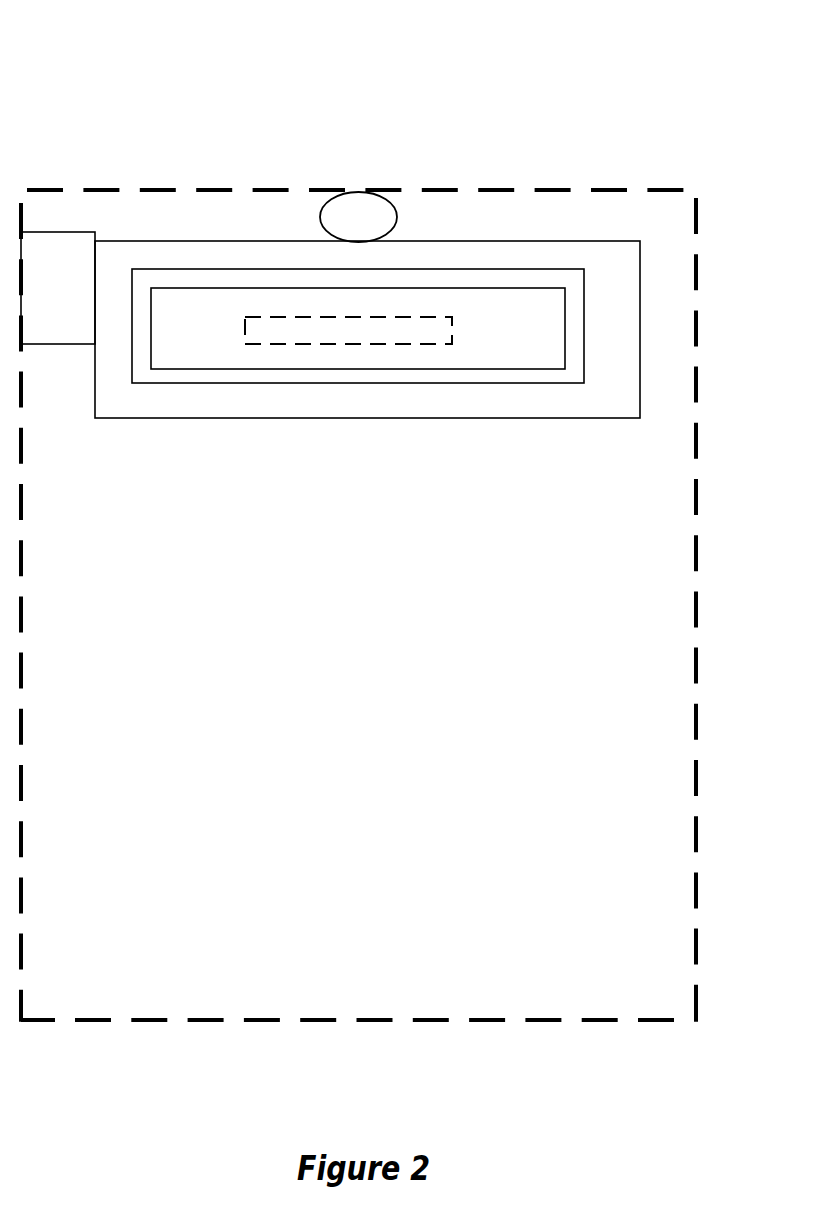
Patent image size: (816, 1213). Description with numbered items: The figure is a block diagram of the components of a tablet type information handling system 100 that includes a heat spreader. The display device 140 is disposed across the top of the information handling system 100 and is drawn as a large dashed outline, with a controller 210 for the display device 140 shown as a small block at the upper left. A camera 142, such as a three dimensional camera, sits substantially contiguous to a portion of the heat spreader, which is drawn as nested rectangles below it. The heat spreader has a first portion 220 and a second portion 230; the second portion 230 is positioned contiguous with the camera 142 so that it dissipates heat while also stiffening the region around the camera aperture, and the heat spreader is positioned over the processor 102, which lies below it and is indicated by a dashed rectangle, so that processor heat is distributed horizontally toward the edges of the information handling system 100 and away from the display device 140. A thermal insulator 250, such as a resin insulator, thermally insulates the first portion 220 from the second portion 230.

The information handling system 100 is at (684, 98).
The processor 102 is at (373, 317).
The display device 140 is at (95, 185).
The camera 142 is at (360, 190).
The controller 210 is at (78, 268).
The first portion 220 is at (500, 288).
The second portion 230 is at (152, 242).
The thermal insulator 250 is at (470, 269).